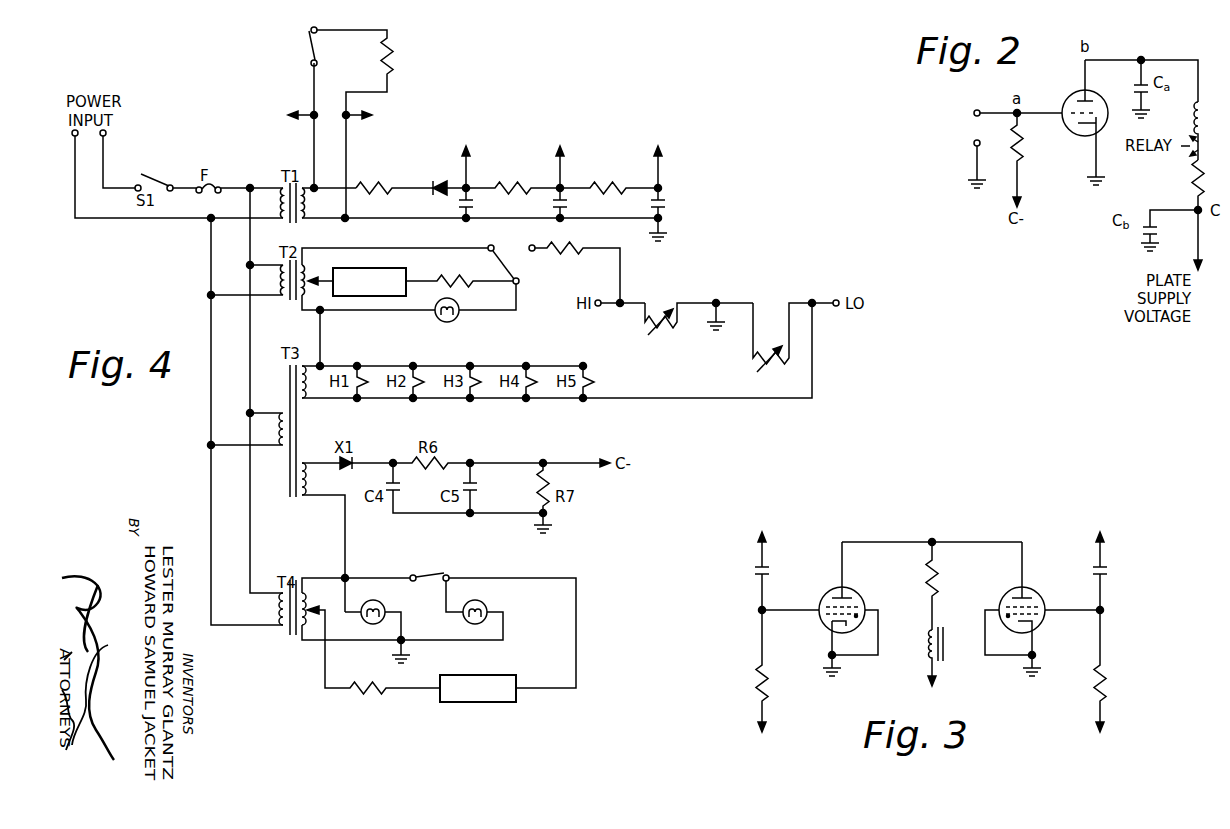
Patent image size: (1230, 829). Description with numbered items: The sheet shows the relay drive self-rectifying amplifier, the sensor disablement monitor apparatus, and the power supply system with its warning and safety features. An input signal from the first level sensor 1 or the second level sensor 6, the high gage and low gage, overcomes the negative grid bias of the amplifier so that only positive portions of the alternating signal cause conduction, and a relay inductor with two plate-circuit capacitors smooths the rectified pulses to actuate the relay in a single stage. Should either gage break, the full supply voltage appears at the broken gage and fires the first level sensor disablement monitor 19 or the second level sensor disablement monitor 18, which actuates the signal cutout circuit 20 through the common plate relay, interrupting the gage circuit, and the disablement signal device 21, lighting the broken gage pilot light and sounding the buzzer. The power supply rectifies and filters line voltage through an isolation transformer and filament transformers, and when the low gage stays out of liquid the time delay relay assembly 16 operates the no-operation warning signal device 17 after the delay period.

In FIG. 4, the time delay relay assembly 16 is at (450, 94).
In FIG. 4, the disablement signal device 21 is at (432, 338).
In FIG. 4, the level 1 sensor 1 is at (668, 295).
In FIG. 4, the level 2 sensor 6 is at (781, 295).
In FIG. 4, the no-operation warning signal device 17 is at (537, 631).
In FIG. 3, the level 1 sensor disablement monitor 19 is at (812, 568).
In FIG. 3, the signal cutout circuit 20 is at (942, 534).
In FIG. 3, the level 2 sensor disablement monitor 18 is at (1070, 568).